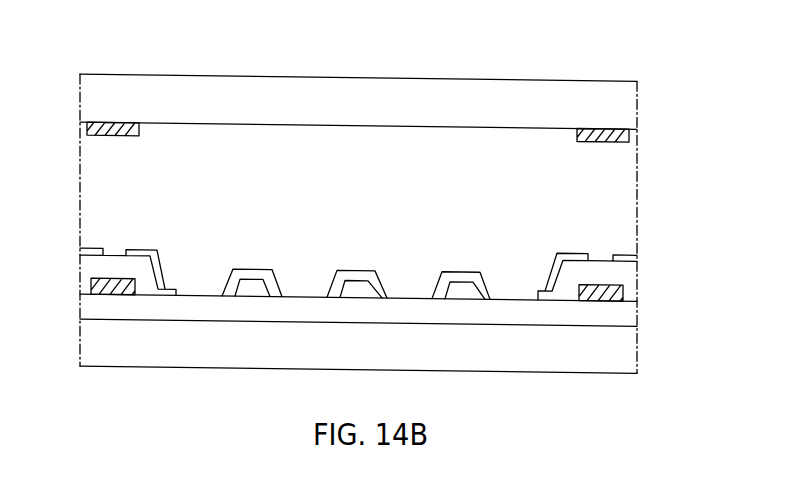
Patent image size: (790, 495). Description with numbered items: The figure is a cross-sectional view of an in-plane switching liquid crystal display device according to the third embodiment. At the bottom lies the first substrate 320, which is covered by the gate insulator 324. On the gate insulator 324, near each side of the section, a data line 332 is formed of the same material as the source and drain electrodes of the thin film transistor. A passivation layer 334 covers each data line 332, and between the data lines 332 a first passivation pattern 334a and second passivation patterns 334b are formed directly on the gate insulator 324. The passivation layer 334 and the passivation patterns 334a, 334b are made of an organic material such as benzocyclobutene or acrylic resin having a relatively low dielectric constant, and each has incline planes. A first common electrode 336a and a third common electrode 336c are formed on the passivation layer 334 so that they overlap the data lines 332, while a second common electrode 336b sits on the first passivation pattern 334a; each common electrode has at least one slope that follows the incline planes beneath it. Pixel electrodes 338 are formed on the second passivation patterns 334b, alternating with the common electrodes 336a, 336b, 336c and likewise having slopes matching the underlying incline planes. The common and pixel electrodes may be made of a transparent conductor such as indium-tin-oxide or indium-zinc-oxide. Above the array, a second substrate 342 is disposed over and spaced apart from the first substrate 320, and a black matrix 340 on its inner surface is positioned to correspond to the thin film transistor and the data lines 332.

The first substrate 320 is at (378, 357).
The gate insulator 324 is at (225, 313).
The data line 332 is at (104, 278).
The passivation layer 334 is at (125, 258).
The first passivation pattern 334a is at (335, 272).
The second passivation pattern 334b is at (223, 273).
The first common electrode 336a is at (156, 249).
The second common electrode 336b is at (360, 272).
The third common electrode 336c is at (562, 253).
The pixel electrode 338 is at (255, 270).
The black matrix 340 is at (120, 124).
The second substrate 342 is at (330, 84).